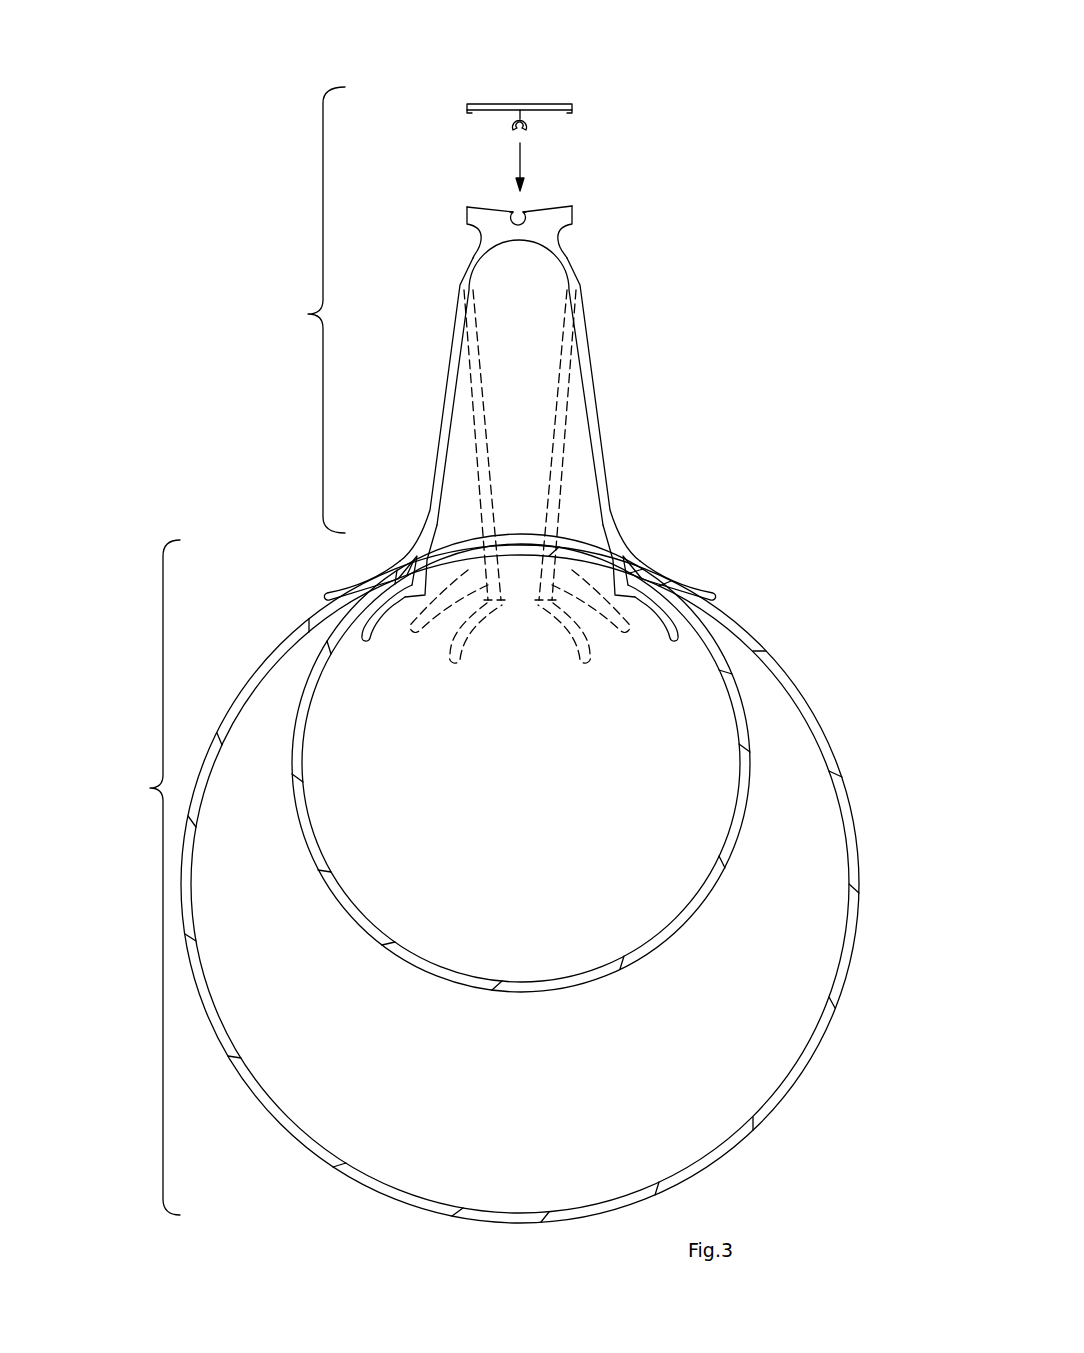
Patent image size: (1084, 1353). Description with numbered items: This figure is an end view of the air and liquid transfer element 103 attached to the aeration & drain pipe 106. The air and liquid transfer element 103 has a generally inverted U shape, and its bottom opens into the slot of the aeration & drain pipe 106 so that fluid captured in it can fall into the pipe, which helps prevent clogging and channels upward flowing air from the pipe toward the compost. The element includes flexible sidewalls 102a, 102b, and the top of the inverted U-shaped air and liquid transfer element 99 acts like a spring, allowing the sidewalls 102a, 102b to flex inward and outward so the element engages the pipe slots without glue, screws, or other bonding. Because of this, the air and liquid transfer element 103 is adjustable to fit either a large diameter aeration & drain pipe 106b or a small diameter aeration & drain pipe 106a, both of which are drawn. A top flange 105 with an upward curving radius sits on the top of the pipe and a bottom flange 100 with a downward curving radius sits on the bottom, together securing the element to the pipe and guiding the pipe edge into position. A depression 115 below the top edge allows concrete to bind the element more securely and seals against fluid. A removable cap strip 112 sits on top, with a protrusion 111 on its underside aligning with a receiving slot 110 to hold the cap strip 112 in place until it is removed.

The air and liquid transfer element 99 is at (452, 267).
The bottom flange 100 is at (645, 612).
The flexible sidewall 102a is at (588, 345).
The flexible sidewall 102b is at (380, 400).
The air and liquid transfer element 103 is at (304, 310).
The top flange 105 is at (678, 562).
The aeration & drain pipe 106 is at (140, 877).
The small diameter aeration & drain pipe 106a is at (752, 770).
The large diameter aeration & drain pipe 106b is at (757, 1128).
The receiving slot 110 is at (516, 210).
The protrusion 111 is at (528, 125).
The removable cap strip 112 is at (485, 104).
The depression 115 is at (462, 238).